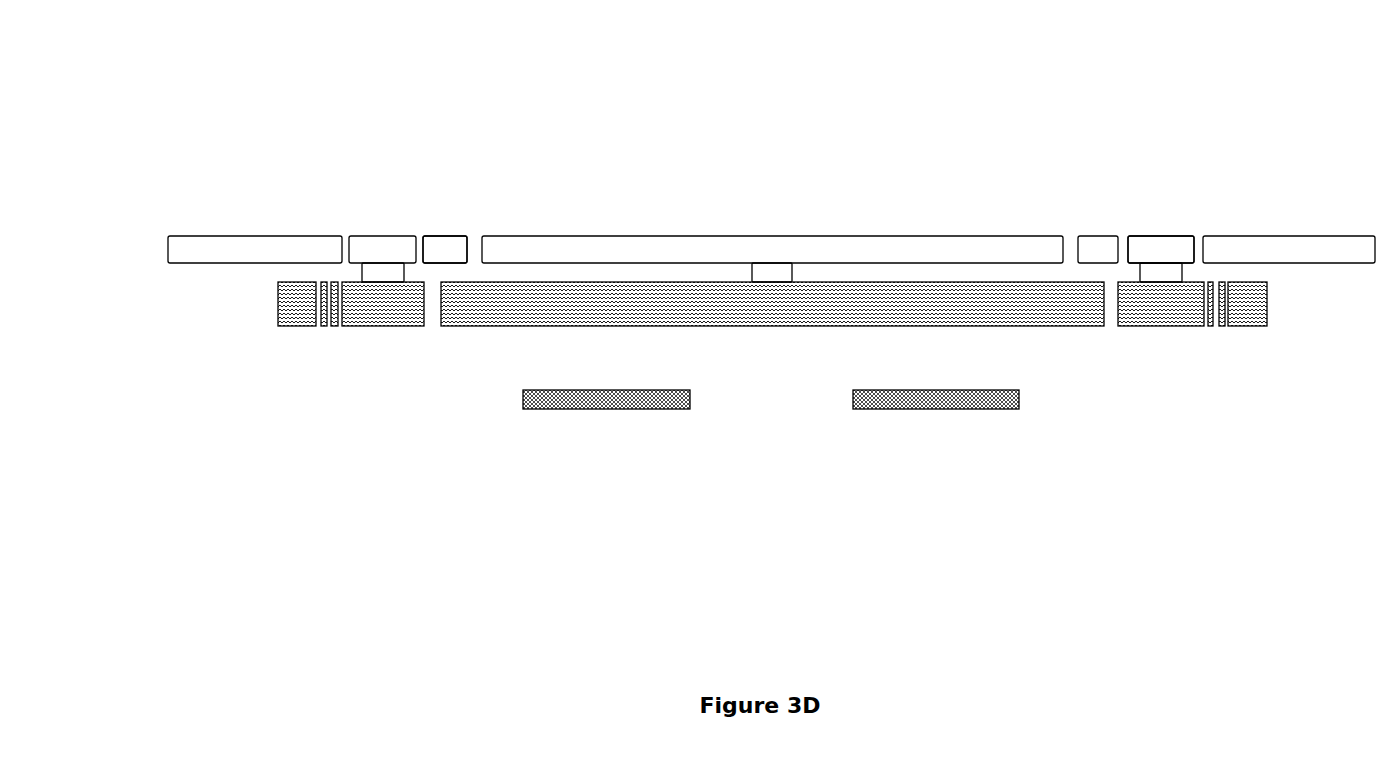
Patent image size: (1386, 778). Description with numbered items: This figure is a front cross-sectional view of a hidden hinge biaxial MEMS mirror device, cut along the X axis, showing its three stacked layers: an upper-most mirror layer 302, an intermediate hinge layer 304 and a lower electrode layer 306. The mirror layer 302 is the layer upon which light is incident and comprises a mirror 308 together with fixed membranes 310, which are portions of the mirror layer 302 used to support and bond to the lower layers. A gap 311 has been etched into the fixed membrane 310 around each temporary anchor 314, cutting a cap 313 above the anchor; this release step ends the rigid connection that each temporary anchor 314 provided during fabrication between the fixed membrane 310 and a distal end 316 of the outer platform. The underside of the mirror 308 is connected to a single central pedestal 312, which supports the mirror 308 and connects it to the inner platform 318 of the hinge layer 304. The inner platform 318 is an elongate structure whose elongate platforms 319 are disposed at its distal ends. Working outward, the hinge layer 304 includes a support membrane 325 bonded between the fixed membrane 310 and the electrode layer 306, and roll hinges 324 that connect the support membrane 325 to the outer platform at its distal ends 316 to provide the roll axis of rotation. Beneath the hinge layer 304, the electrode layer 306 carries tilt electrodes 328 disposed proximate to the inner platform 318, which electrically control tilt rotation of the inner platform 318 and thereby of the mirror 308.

The mirror layer 302 is at (148, 250).
The hinge layer 304 is at (194, 303).
The electrode layer 306 is at (488, 400).
The mirror 308 is at (637, 236).
The fixed membrane 310 is at (255, 236).
The gap 311 is at (418, 236).
The pedestal 312 is at (770, 270).
The cap 313 is at (392, 236).
The temporary anchor 314 is at (373, 270).
The distal end of outer platform 316 is at (370, 326).
The inner platform 318 is at (783, 393).
The elongate platform 319 is at (688, 326).
The roll hinge 324 is at (323, 326).
The support membrane 325 is at (278, 302).
The tilt electrode 328 is at (603, 409).